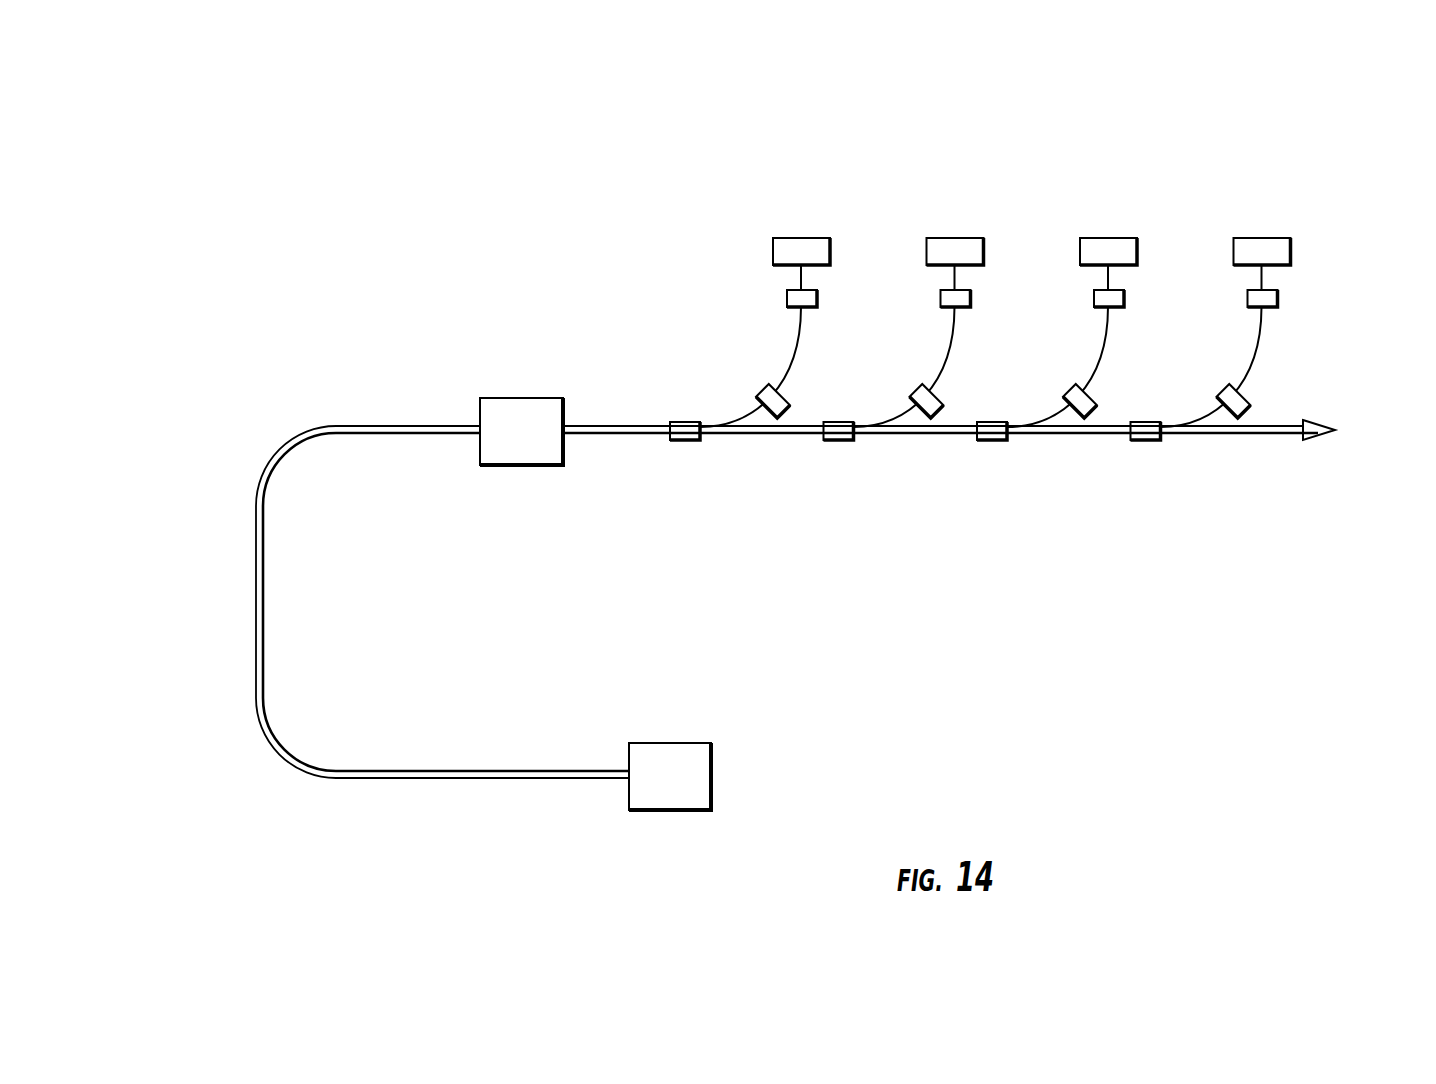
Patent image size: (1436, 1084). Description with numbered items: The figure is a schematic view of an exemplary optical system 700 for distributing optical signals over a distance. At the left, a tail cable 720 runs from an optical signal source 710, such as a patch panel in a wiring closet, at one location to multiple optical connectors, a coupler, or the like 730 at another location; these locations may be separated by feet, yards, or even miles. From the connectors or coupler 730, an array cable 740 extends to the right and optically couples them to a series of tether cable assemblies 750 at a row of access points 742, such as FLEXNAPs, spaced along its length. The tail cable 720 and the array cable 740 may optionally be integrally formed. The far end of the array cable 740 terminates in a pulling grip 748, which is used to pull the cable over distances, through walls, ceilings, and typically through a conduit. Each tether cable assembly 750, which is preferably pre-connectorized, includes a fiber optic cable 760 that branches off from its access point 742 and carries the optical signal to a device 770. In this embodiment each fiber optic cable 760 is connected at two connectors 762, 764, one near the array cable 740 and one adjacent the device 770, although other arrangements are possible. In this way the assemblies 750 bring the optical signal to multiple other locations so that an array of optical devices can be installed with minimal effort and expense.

The optical system 700 is at (1067, 593).
The optical signal source 710 is at (680, 743).
The tail cable 720 is at (253, 611).
The optical connectors, coupler, or the like 730 is at (530, 397).
The array cable 740 is at (628, 423).
The access point 742 is at (685, 441).
The pulling grip 748 is at (1316, 438).
The tether cable assembly 750 is at (748, 213).
The fiber optic cable 760 is at (797, 352).
The connector 762 is at (772, 402).
The connector 764 is at (790, 296).
The device 770 is at (795, 240).